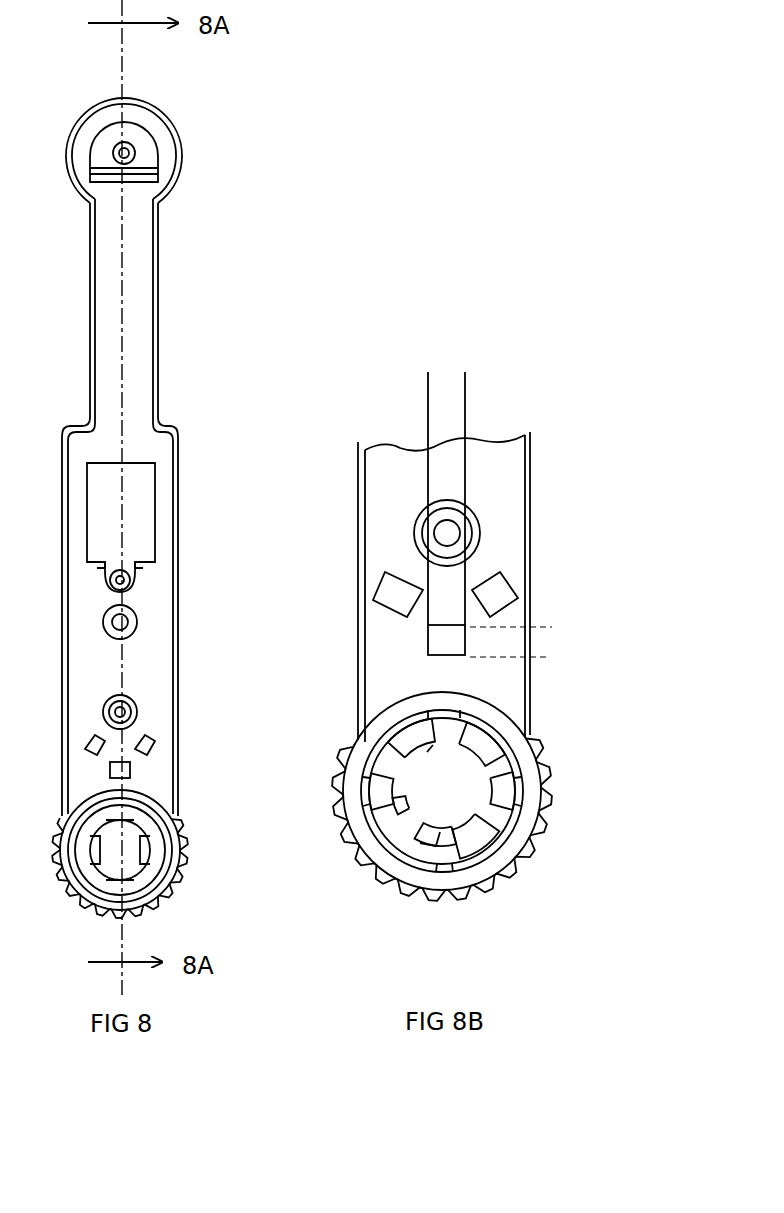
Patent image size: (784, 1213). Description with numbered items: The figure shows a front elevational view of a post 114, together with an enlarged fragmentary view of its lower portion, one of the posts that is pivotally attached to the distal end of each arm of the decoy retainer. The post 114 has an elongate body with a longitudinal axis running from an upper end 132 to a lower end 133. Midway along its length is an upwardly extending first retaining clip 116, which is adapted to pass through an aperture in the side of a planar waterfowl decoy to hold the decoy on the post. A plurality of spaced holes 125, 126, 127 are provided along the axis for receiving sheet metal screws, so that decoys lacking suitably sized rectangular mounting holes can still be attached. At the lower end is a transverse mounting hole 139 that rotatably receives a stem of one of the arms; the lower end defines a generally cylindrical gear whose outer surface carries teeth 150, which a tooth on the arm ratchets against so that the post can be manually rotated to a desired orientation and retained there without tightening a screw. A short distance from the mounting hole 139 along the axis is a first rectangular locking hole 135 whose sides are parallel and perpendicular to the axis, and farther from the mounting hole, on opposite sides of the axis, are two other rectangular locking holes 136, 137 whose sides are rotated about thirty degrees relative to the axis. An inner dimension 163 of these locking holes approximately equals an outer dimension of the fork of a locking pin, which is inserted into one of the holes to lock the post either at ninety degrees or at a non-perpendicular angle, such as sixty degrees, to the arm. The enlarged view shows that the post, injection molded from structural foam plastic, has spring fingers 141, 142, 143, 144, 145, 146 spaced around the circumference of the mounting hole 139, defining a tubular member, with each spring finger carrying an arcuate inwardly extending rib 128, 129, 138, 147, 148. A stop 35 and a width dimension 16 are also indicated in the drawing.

In FIG. 8, the post 114 is at (206, 258).
In FIG. 8, the upper end 132 is at (176, 119).
In FIG. 8, the first retaining clip 116 is at (158, 510).
In FIG. 8, the hole 125 is at (138, 578).
In FIG. 8, the hole 126 is at (136, 620).
In FIG. 8, the hole 127 is at (136, 708).
In FIG. 8B, the hole 127 is at (472, 520).
In FIG. 8, the stop member 35 is at (112, 772).
In FIG. 8, the lower end 133 is at (175, 880).
In FIG. 8, the mounting hole 139 is at (88, 900).
In FIG. 8B, the mounting hole 139 is at (443, 832).
In FIG. 8B, the channel width 16 is at (513, 400).
In FIG. 8B, the rectangular locking hole 136 is at (380, 585).
In FIG. 8B, the rectangular locking hole 137 is at (510, 578).
In FIG. 8B, the first locking hole 135 is at (427, 657).
In FIG. 8B, the inner dimension 163 is at (540, 587).
In FIG. 8B, the arcuate inwardly extending rib 129 is at (527, 862).
In FIG. 8B, the teeth 150 is at (556, 807).
In FIG. 8B, the arcuate inwardly extending rib 138 is at (494, 770).
In FIG. 8B, the spring finger 144 is at (481, 736).
In FIG. 8B, the spring finger 145 is at (390, 739).
In FIG. 8B, the spring finger 143 is at (517, 791).
In FIG. 8B, the spring finger 142 is at (484, 851).
In FIG. 8B, the spring finger 146 is at (373, 801).
In FIG. 8B, the arcuate inwardly extending rib 147 is at (406, 811).
In FIG. 8B, the spring finger 141 is at (409, 828).
In FIG. 8B, the arcuate inwardly extending rib 128 is at (424, 830).
In FIG. 8B, the arcuate inwardly extending rib 148 is at (421, 749).